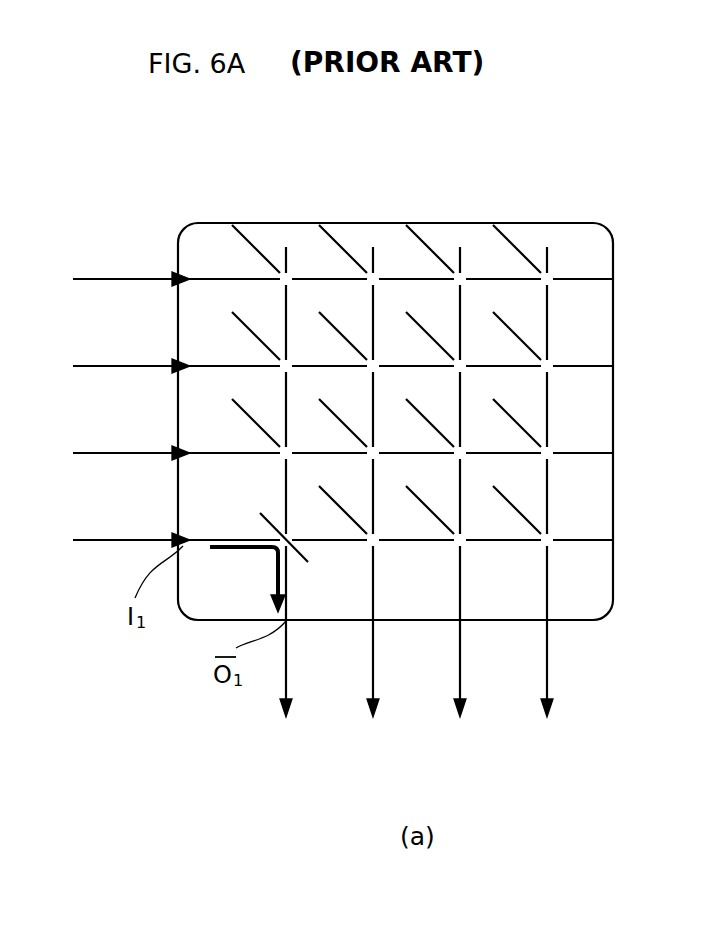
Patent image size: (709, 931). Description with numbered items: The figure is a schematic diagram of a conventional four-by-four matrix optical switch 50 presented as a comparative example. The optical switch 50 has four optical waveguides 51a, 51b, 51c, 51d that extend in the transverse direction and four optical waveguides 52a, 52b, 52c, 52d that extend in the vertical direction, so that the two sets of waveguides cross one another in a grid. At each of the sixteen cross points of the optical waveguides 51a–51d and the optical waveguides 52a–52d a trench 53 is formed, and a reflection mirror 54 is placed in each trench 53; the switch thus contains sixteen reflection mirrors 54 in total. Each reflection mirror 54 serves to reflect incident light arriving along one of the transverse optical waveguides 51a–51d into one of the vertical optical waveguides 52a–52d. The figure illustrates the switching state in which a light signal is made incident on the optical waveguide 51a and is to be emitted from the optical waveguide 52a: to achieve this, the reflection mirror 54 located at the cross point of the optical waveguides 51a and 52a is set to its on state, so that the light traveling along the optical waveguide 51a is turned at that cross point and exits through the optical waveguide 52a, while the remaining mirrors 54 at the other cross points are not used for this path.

The optical switch 50 is at (416, 188).
The optical waveguide 51a is at (213, 539).
The optical waveguide 51b is at (213, 452).
The optical waveguide 51c is at (213, 364).
The optical waveguide 51d is at (213, 278).
The optical waveguide 52a is at (288, 603).
The optical waveguide 52b is at (375, 603).
The optical waveguide 52c is at (462, 603).
The optical waveguide 52d is at (549, 603).
The trench 53 is at (549, 273).
The reflection mirror 54 is at (518, 240).